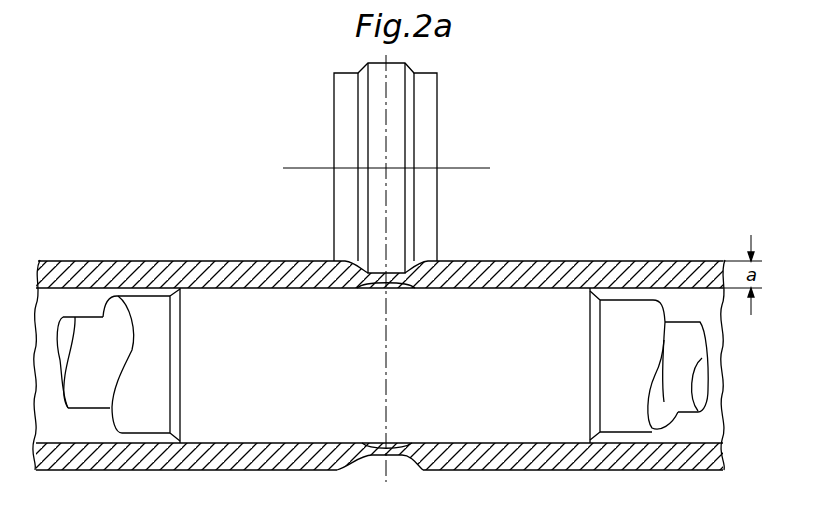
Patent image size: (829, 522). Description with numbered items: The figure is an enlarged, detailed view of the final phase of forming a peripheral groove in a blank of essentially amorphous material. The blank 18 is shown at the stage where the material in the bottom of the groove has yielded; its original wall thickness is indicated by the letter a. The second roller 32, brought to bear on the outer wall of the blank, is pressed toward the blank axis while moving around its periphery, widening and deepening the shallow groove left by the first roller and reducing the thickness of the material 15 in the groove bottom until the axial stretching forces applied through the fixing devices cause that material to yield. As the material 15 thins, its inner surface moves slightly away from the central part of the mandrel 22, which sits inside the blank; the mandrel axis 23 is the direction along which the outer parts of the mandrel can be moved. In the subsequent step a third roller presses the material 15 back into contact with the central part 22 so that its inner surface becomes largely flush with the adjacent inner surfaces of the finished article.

The material in the bottom of the groove 15 is at (373, 456).
The blank 18 is at (229, 271).
The central part of the mandrel 22 is at (455, 312).
The mandrel axis 23 is at (681, 335).
The second roller 32 is at (347, 130).